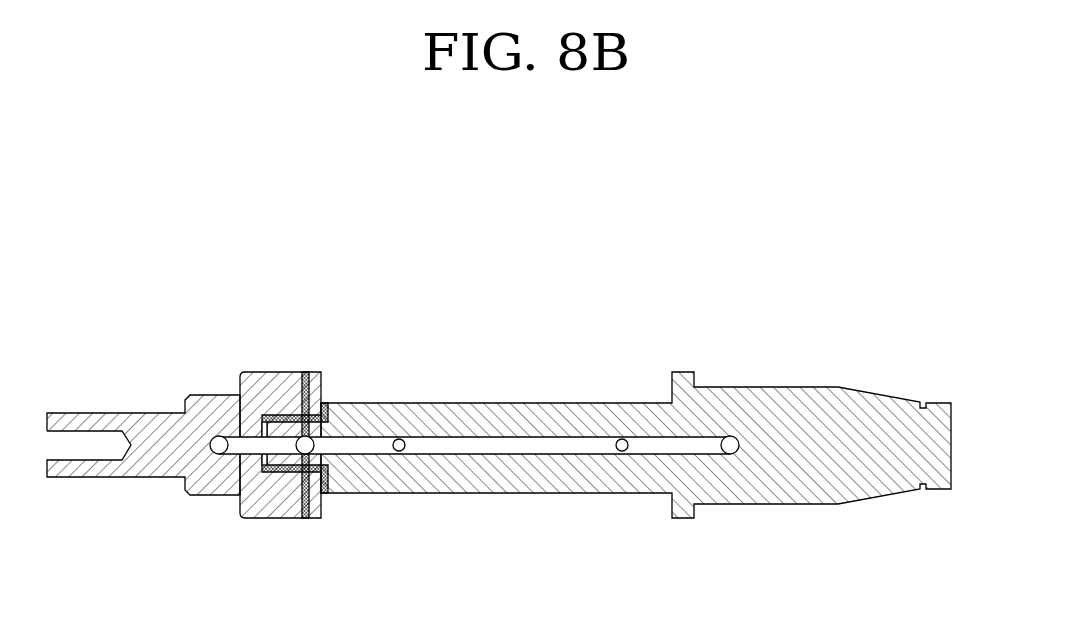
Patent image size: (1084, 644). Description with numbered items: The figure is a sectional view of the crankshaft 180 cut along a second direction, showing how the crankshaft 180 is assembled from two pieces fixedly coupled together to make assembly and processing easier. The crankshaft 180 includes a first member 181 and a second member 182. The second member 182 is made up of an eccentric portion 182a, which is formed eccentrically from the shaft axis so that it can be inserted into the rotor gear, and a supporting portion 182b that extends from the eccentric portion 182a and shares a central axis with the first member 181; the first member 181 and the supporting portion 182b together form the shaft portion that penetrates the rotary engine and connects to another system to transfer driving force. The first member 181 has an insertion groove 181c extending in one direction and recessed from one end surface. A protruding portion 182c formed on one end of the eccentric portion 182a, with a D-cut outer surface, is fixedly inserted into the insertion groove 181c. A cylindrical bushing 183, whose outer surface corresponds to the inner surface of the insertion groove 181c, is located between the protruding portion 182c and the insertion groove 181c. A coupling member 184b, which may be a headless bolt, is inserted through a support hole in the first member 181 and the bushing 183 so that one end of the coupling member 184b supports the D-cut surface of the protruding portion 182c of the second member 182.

The crankshaft 180 is at (107, 343).
The first member 181 is at (147, 424).
The insertion groove 181c is at (260, 424).
The second member 182 is at (785, 302).
The eccentric portion 182a is at (582, 405).
The supporting portion 182b is at (766, 400).
The protruding portion 182c is at (280, 467).
The bushing 183 is at (340, 403).
The coupling member 184b is at (304, 372).